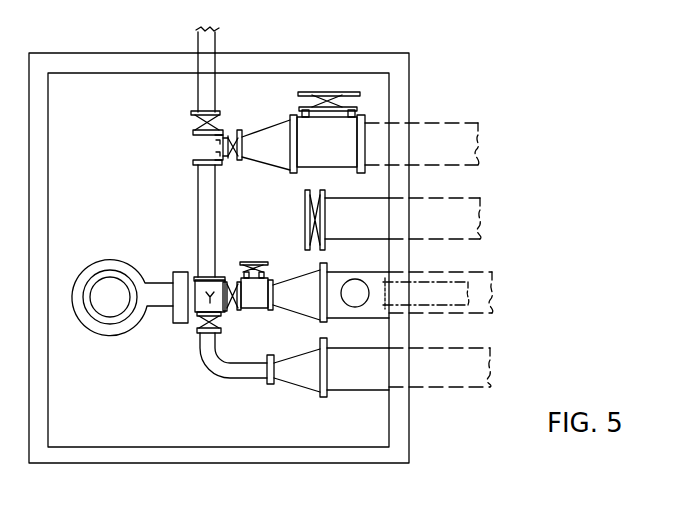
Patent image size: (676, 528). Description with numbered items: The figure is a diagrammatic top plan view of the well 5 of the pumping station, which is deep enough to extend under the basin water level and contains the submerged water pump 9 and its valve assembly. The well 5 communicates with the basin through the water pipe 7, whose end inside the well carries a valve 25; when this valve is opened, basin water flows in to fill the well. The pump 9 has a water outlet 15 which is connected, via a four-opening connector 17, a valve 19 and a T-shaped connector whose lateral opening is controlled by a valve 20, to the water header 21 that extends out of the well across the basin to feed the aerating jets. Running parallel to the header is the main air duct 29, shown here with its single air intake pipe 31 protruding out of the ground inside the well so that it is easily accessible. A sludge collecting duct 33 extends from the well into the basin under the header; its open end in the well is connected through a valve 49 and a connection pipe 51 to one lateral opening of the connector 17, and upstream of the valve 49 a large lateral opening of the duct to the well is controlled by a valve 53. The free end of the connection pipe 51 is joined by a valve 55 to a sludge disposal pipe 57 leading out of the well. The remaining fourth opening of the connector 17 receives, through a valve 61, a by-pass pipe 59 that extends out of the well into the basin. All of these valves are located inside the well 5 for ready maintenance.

The well 5 is at (202, 463).
The water pipe 7 is at (480, 207).
The submerged water pump 9 is at (113, 334).
The water outlet 15 is at (150, 308).
The four-opening connector 17 is at (195, 268).
The valve 19 is at (233, 307).
The valve 20 is at (258, 268).
The water header 21 is at (484, 283).
The valve 25 is at (312, 221).
The main air duct 29 is at (427, 299).
The air intake pipe 31 is at (357, 306).
The sludge collecting duct 33 is at (436, 137).
The valve 49 is at (231, 150).
The connection pipe 51 is at (200, 208).
The valve 53 is at (330, 92).
The valve 55 is at (195, 127).
The sludge disposal pipe 57 is at (211, 37).
The by-pass pipe 59 is at (355, 375).
The valve 61 is at (205, 323).